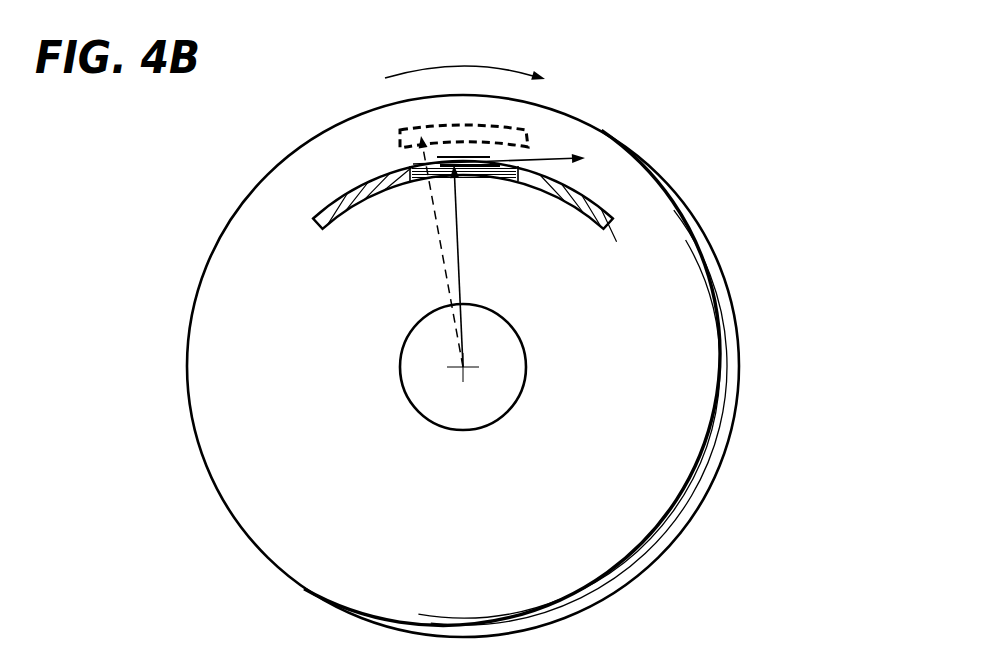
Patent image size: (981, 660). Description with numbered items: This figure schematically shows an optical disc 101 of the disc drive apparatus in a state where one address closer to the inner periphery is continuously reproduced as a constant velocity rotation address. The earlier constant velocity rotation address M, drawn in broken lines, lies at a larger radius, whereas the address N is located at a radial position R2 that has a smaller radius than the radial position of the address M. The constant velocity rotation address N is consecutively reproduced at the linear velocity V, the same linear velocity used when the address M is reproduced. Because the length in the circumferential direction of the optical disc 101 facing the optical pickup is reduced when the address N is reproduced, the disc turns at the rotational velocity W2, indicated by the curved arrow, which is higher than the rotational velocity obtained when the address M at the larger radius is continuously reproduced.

The optical disc 101 is at (705, 340).
The constant velocity rotation address M is at (407, 130).
The constant velocity rotation address N is at (463, 161).
The linear velocity V is at (543, 158).
The rotational velocity W2 is at (465, 55).
The radial position R2 is at (453, 273).